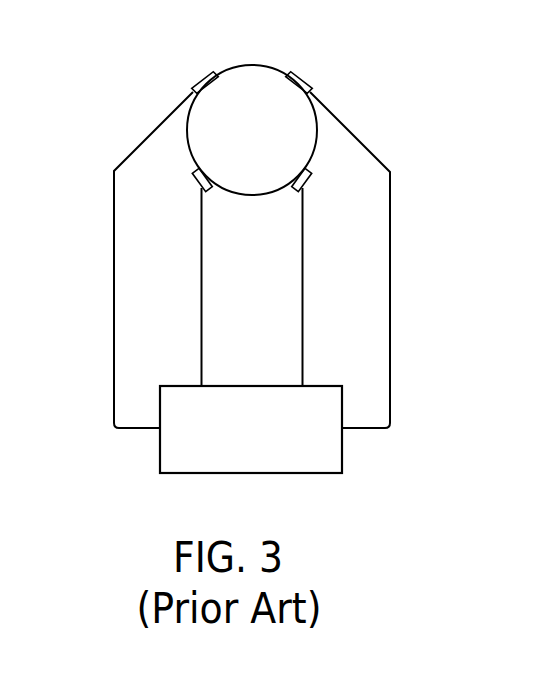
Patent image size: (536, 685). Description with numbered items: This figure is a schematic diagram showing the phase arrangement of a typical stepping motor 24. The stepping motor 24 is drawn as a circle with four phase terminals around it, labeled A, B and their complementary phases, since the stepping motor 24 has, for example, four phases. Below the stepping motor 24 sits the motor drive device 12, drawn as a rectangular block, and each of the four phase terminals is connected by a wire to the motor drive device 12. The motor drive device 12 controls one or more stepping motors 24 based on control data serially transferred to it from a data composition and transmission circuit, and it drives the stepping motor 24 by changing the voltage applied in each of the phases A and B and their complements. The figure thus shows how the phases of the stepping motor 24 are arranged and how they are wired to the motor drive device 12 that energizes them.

The stepping motor 24 is at (253, 83).
The motor drive device 12 is at (337, 458).
The phase A terminal A is at (172, 186).
The phase B terminal B is at (315, 187).